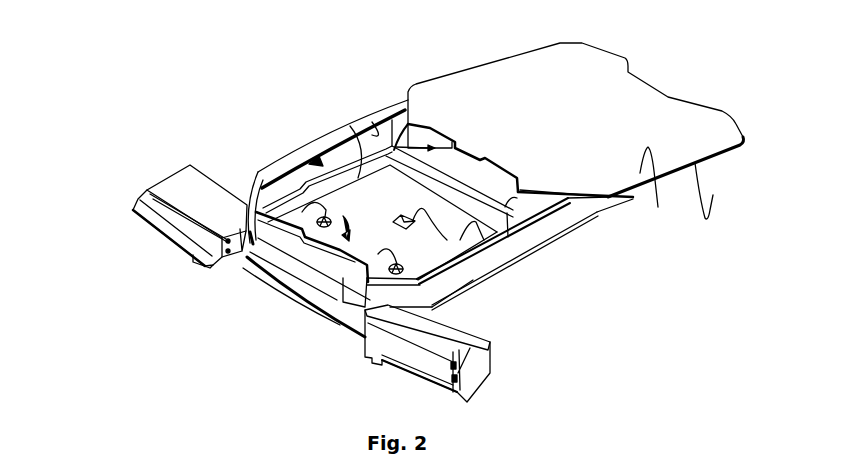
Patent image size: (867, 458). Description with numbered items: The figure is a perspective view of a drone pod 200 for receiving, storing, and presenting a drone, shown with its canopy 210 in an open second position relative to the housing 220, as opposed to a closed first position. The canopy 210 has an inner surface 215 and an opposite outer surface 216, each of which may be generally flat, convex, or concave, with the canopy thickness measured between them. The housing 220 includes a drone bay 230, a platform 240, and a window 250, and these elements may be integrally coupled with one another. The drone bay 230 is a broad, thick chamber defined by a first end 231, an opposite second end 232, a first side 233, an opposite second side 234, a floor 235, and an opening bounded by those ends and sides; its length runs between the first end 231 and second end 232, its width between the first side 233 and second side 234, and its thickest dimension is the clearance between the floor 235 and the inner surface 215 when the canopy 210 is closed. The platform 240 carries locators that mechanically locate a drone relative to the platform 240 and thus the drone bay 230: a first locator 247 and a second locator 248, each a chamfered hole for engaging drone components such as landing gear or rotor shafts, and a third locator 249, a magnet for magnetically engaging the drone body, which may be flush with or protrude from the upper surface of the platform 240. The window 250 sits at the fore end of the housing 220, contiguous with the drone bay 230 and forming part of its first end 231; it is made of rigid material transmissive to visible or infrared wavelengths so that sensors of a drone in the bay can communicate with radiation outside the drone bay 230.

The drone pod 200 is at (451, 46).
The canopy 210 is at (645, 80).
The inner surface 215 is at (720, 191).
The outer surface 216 is at (661, 193).
The housing 220 is at (261, 172).
The drone bay 230 is at (310, 143).
The first end 231 is at (300, 272).
The second end 232 is at (392, 118).
The first side 233 is at (380, 136).
The second side 234 is at (513, 212).
The floor 235 is at (347, 127).
The platform 240 is at (495, 235).
The first locator 247 is at (262, 263).
The second locator 248 is at (367, 305).
The third locator 249 is at (452, 252).
The window 250 is at (322, 277).